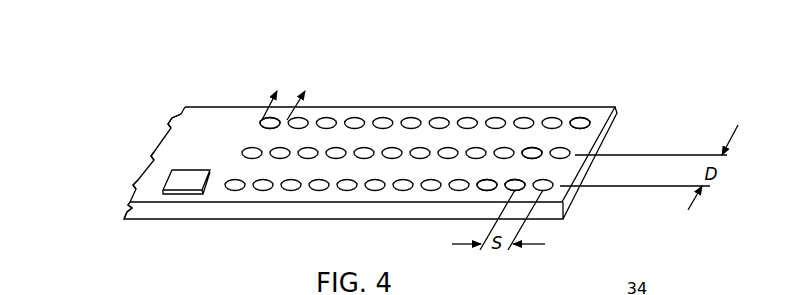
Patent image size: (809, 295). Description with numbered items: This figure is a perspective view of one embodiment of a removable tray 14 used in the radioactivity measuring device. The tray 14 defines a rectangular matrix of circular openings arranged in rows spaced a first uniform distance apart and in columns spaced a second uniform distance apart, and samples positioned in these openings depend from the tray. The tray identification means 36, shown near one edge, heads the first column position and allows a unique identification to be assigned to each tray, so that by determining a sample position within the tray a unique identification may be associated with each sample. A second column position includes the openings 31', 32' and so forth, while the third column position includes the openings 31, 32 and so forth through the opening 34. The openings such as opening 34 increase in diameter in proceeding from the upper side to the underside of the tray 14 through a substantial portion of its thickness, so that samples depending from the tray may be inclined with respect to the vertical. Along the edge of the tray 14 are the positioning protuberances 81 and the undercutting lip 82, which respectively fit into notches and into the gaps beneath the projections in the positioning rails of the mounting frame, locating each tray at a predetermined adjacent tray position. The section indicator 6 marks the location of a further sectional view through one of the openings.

The removable tray 14 is at (347, 208).
The opening 31 is at (468, 95).
The opening 31' is at (460, 135).
The opening 32 is at (612, 74).
The opening 32' is at (564, 89).
The opening 34 is at (270, 122).
The identification means 36 is at (211, 170).
The positioning protuberances 81 is at (152, 153).
The undercutting lip 82 is at (128, 208).
The section view indicator 6 is at (290, 98).